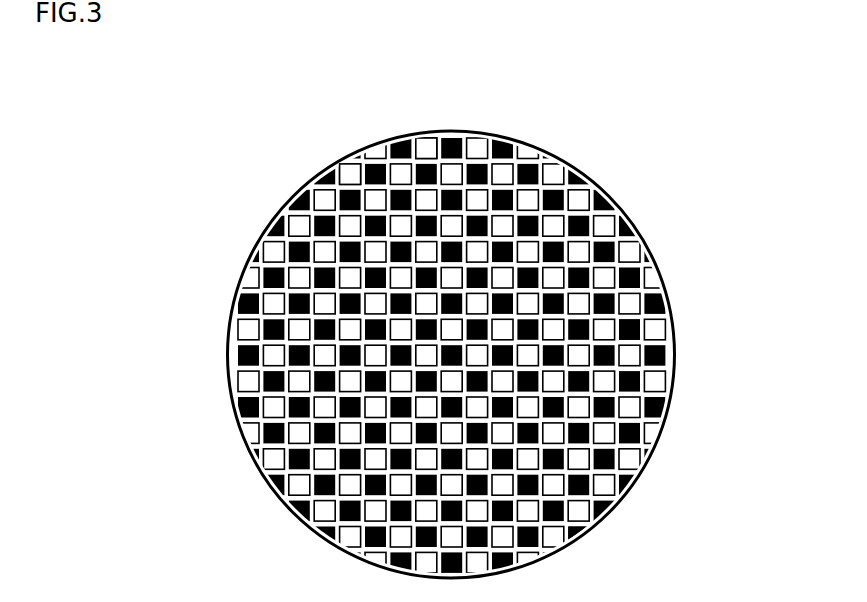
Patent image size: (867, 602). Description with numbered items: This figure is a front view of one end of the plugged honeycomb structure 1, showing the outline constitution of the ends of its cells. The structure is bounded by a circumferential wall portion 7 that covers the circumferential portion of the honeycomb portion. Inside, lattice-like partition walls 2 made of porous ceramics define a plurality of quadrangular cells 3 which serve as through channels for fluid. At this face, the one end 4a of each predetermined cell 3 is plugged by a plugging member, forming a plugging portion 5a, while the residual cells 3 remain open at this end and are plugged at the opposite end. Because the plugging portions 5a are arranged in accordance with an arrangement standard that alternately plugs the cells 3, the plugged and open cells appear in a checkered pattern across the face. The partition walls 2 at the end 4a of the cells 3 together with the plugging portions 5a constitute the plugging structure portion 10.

The plugged honeycomb structure 1 is at (182, 143).
The plugging structure portion 10 is at (250, 180).
The partition wall 2 is at (437, 163).
The cell 3 is at (350, 170).
The one end 4a is at (565, 526).
The plugging portion 5a is at (637, 327).
The circumferential wall portion 7 is at (663, 417).